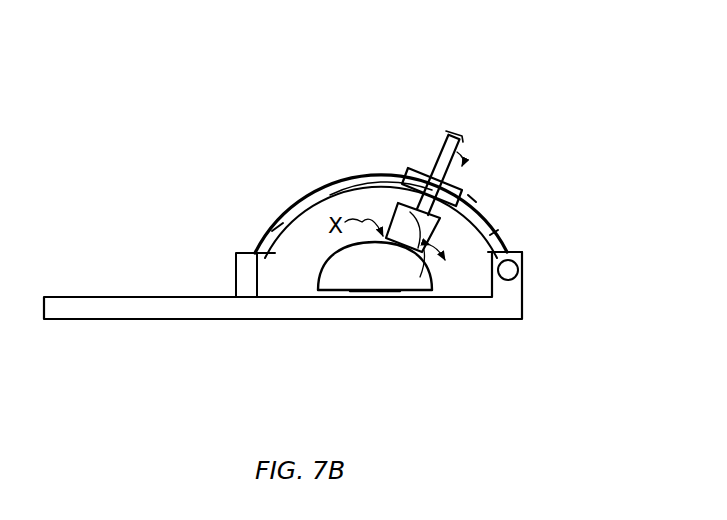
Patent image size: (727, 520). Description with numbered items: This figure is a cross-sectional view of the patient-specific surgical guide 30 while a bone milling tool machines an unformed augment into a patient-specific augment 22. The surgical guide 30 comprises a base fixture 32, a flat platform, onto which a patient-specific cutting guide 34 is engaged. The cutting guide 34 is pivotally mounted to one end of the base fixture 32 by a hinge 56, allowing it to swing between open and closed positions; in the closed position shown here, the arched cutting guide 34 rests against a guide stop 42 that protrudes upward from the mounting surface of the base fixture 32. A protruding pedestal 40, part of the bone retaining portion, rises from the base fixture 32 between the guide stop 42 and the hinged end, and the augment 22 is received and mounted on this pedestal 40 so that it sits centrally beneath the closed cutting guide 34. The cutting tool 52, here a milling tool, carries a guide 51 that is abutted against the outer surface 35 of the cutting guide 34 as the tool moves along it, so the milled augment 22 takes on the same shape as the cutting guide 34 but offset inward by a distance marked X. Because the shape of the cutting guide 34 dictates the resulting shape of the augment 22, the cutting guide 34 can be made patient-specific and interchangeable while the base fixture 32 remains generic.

The patient-specific augment 22 is at (342, 273).
The patient-specific surgical guide 30 is at (541, 162).
The base fixture 32 is at (172, 310).
The patient-specific cutting guide 34 is at (293, 197).
The outer surface 35 is at (395, 187).
The pedestal 40 is at (420, 277).
The guide stop 42 is at (241, 271).
The guide 51 is at (459, 201).
The cutting tool 52 is at (433, 177).
The hinge 56 is at (509, 249).